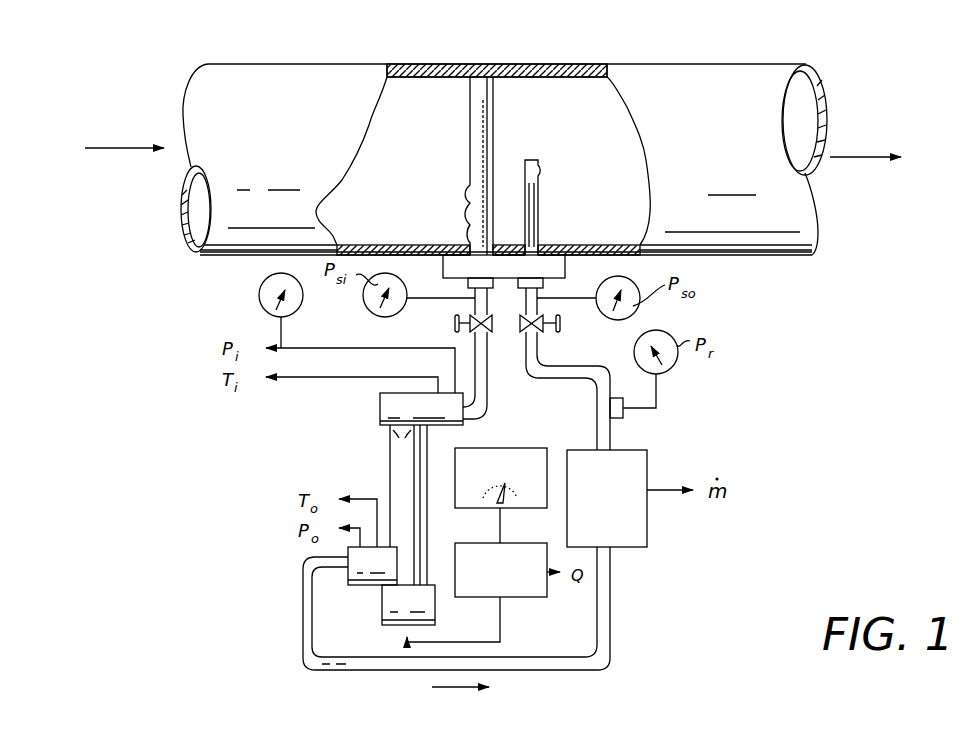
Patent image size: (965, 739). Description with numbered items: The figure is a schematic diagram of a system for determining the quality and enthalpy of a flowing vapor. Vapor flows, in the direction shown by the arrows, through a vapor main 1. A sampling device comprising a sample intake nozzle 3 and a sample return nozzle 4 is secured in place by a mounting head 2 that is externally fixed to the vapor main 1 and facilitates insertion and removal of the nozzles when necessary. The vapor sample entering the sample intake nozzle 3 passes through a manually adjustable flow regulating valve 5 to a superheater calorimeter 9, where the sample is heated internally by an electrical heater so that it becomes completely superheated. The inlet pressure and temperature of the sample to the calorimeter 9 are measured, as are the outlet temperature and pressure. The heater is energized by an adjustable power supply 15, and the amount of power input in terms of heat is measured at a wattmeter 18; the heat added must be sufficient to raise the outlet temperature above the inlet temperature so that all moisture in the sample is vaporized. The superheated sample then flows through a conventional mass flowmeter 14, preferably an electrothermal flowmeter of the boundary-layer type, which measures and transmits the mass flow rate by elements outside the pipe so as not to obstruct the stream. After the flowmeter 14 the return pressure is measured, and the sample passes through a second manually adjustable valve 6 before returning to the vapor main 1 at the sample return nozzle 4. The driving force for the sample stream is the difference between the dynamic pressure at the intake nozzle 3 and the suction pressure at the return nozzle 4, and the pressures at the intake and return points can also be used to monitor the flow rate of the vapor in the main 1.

The vapor main 1 is at (289, 70).
The mounting head 2 is at (563, 268).
The sample intake nozzle 3 is at (458, 163).
The sample return nozzle 4 is at (548, 203).
The flow regulating valve 5 is at (453, 323).
The manually adjustable valve 6 is at (561, 324).
The superheater calorimeter 9 is at (390, 462).
The mass flowmeter 14 is at (636, 538).
The adjustable power supply 15 is at (543, 448).
The wattmeter 18 is at (520, 598).